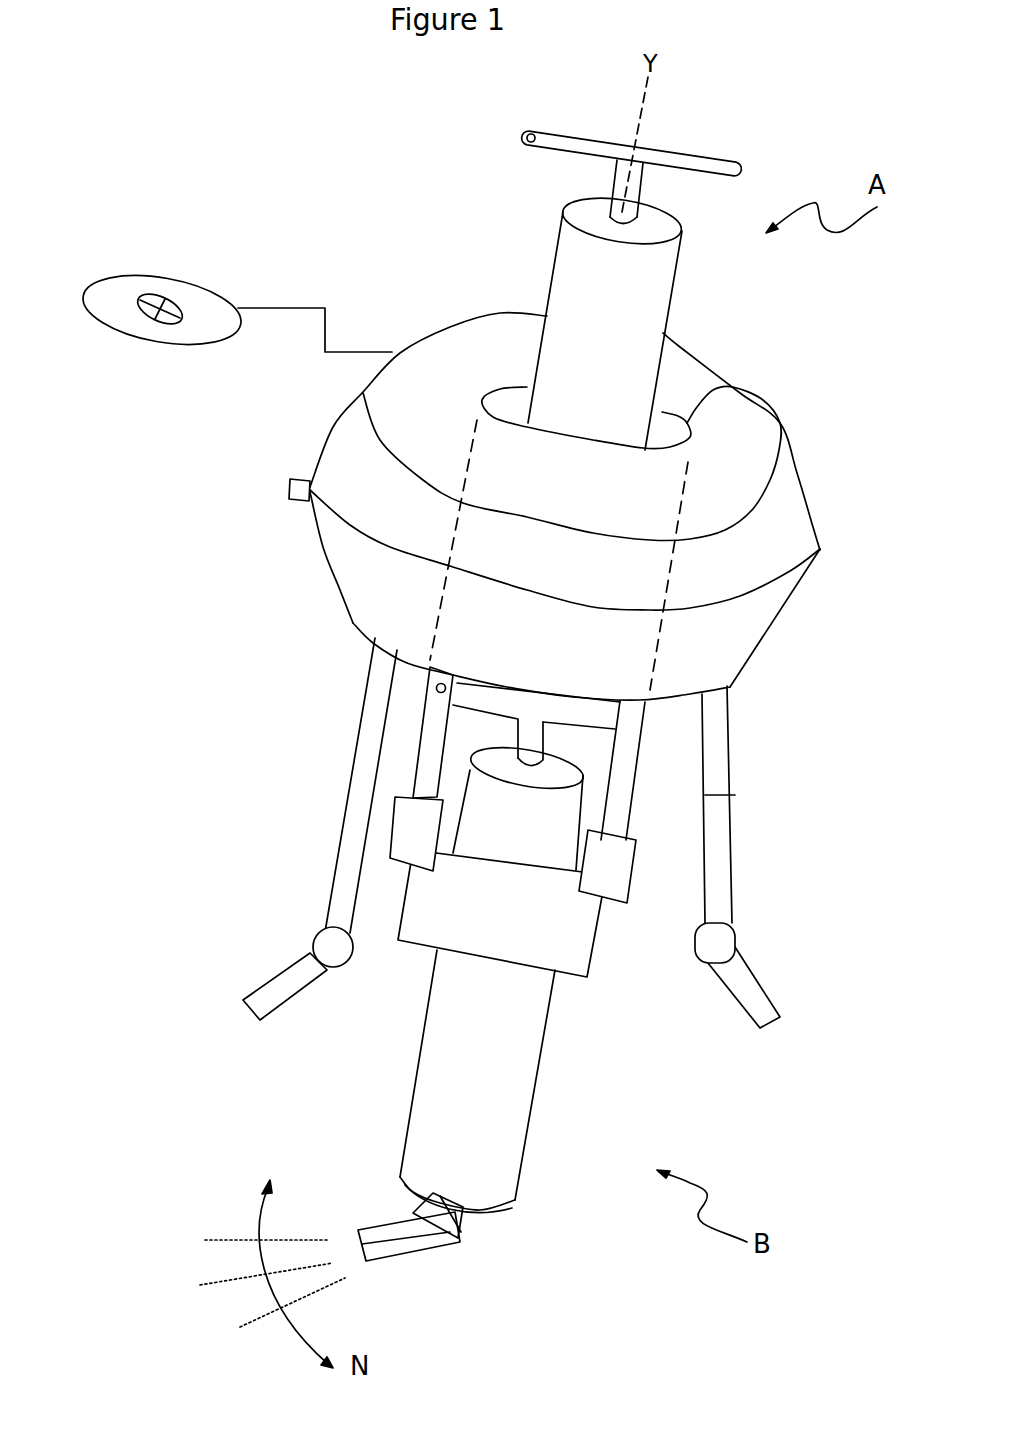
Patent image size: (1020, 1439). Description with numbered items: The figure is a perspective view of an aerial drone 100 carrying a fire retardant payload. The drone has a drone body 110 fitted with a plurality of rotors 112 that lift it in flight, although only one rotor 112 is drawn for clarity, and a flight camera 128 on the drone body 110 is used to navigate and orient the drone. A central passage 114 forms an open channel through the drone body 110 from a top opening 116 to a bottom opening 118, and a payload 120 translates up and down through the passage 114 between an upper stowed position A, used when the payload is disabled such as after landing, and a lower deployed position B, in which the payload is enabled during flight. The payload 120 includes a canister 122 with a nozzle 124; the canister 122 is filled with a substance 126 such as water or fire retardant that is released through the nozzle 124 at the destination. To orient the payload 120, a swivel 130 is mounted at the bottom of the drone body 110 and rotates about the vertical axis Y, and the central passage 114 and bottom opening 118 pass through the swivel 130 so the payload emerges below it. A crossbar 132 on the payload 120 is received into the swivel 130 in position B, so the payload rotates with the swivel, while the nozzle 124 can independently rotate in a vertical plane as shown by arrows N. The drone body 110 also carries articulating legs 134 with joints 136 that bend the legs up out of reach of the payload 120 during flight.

The aerial drone 100 is at (332, 220).
The drone body 110 is at (773, 620).
The rotor 112 is at (118, 297).
The central passage 114 is at (510, 393).
The top opening 116 is at (740, 390).
The bottom opening 118 is at (592, 710).
The payload 120 is at (570, 268).
The canister 122 is at (520, 1080).
The nozzle 124 is at (452, 1232).
The substance (fire retardant) 126 is at (220, 1233).
The flight camera 128 is at (283, 490).
The swivel 130 is at (433, 717).
The crossbar 132 is at (657, 158).
The articulating legs 134 is at (360, 780).
The joint 136 is at (327, 950).